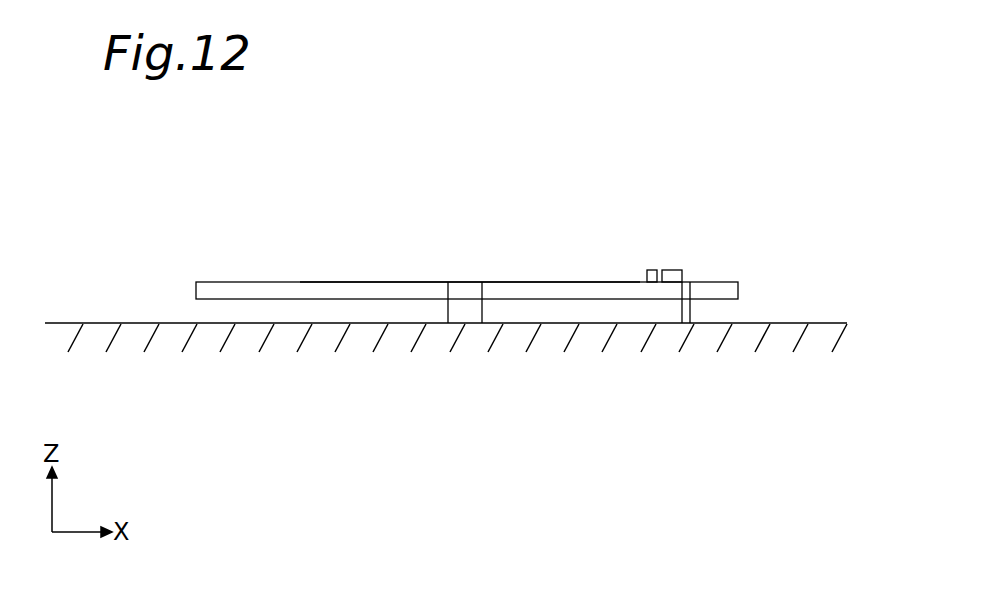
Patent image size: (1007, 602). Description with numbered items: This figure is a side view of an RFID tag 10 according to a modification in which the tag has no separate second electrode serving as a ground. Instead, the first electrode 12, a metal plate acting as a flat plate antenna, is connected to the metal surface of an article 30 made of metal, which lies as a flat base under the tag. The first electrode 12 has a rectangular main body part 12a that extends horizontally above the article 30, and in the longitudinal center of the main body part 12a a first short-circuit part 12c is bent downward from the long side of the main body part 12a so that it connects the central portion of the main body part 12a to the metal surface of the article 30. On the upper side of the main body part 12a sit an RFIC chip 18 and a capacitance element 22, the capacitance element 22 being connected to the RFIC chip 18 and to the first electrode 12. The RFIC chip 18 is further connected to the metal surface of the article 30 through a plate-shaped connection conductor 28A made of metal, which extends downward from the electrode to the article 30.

The RFID tag 10 is at (230, 236).
The first electrode 12 is at (738, 288).
The main body part 12a is at (525, 282).
The first short-circuit part 12c is at (448, 313).
The plate-shaped connection conductor 28A is at (690, 305).
The capacitance element 22 is at (651, 270).
The RFIC chip 18 is at (672, 270).
The article 30 is at (822, 323).